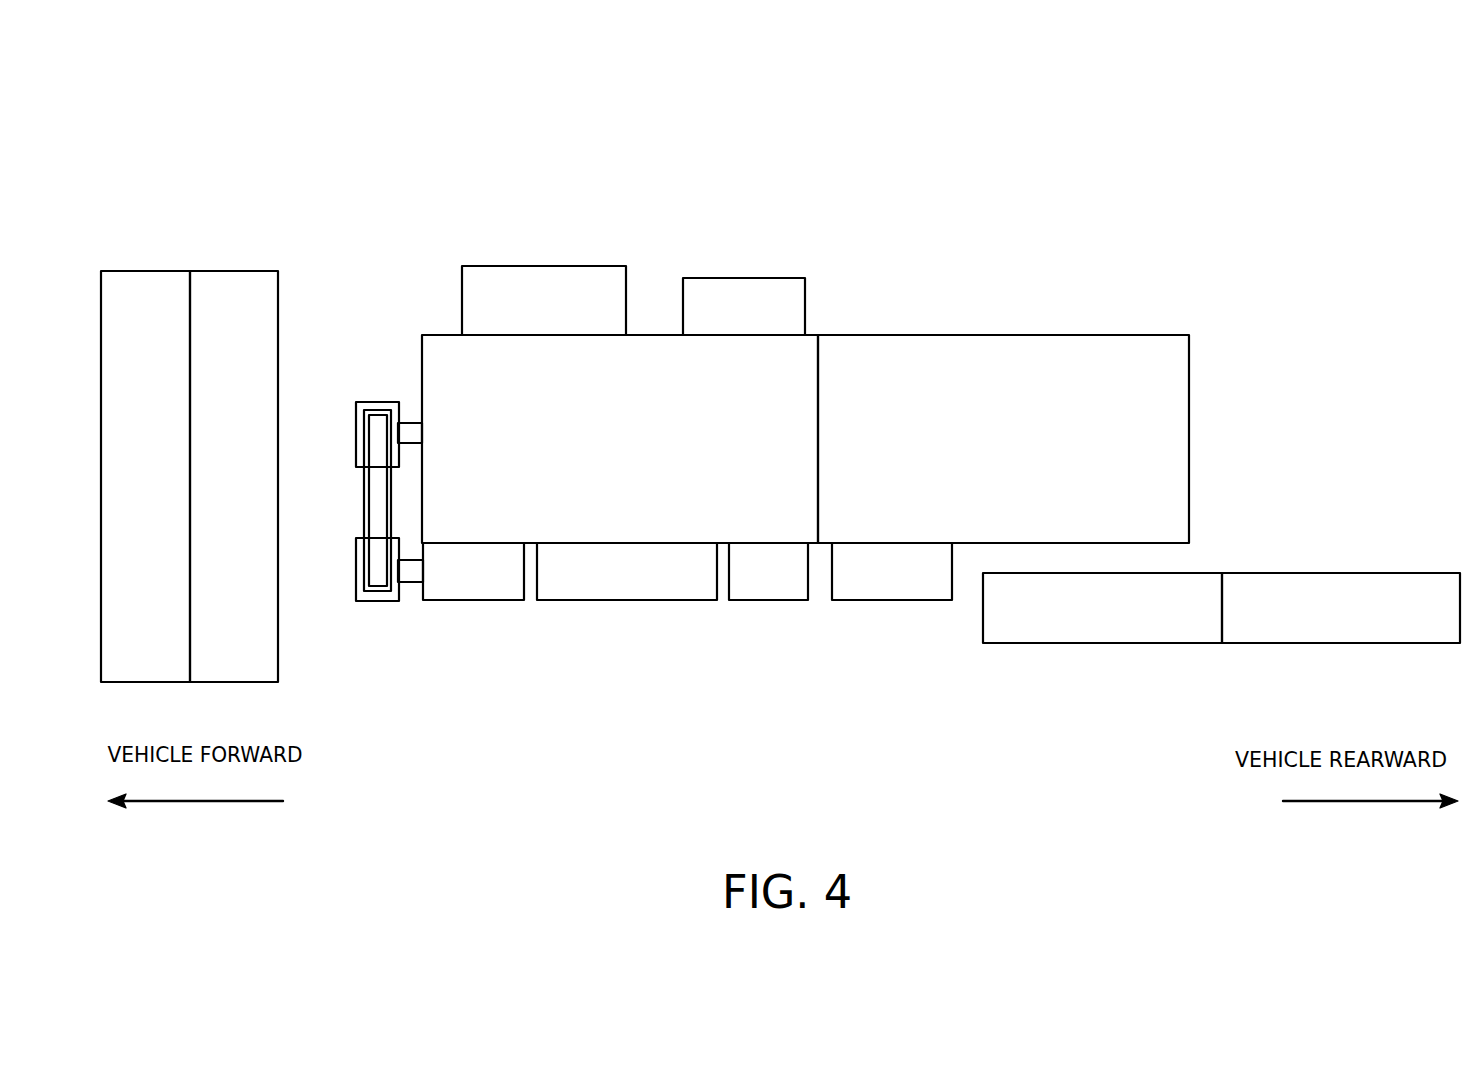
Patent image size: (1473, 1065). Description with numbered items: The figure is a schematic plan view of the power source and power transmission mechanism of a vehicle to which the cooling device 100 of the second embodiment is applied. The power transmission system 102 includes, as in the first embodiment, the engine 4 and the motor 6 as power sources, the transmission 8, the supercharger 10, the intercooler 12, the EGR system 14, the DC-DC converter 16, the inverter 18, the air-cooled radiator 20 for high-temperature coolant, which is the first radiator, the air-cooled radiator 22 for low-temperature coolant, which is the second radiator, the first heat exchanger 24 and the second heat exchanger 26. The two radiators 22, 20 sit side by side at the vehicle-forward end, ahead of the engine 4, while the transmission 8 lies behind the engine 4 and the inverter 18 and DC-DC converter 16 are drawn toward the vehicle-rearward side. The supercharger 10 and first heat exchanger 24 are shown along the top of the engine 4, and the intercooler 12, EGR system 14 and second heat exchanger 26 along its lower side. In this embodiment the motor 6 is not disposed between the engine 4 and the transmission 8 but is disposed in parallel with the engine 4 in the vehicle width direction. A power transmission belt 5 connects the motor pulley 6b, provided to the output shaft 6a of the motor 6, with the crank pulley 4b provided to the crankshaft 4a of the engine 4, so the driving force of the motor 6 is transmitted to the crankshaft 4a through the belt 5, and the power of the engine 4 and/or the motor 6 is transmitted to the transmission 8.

The cooling device 100 is at (209, 104).
The power transmission system 102 is at (1302, 254).
The air-cooled radiator for low-temperature coolant 22 is at (153, 271).
The air-cooled radiator for high-temperature coolant 20 is at (243, 271).
The engine 4 is at (438, 335).
The crankshaft 4a is at (410, 423).
The crank pulley 4b is at (362, 402).
The power transmission belt 5 is at (364, 507).
The motor 6 is at (486, 600).
The output shaft 6a is at (408, 582).
The motor pulley 6b is at (379, 601).
The transmission 8 is at (1158, 335).
The supercharger 10 is at (556, 266).
The first heat exchanger 24 is at (763, 278).
The intercooler 12 is at (648, 600).
The EGR system 14 is at (764, 600).
The second heat exchanger 26 is at (887, 600).
The inverter 18 is at (995, 643).
The DC-DC converter 16 is at (1385, 643).